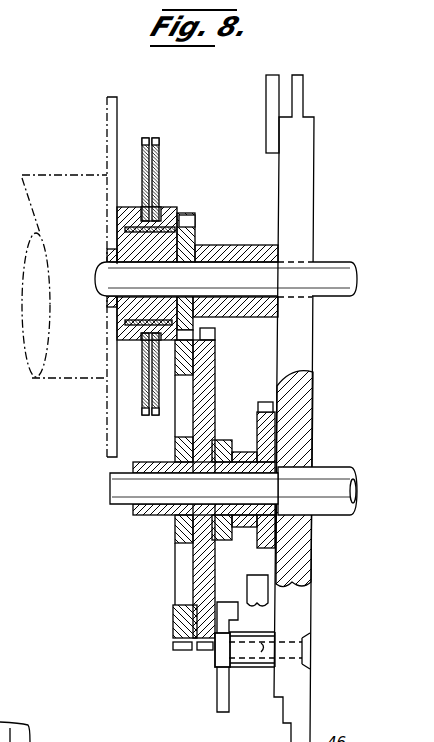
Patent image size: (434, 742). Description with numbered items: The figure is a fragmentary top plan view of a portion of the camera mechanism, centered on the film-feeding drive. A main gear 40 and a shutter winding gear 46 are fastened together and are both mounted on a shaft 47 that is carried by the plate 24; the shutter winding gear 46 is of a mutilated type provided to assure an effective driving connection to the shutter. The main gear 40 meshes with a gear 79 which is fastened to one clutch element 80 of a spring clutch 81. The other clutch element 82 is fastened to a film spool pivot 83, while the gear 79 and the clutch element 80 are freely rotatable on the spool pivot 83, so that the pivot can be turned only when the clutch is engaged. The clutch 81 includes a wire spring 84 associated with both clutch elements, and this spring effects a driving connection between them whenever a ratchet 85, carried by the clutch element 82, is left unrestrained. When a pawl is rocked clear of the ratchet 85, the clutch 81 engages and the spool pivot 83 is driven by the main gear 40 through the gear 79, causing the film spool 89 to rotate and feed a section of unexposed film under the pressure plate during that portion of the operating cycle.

The plate 24 is at (312, 420).
The main gear 40 is at (180, 652).
The shutter winding gear 46 is at (205, 652).
The shaft 47 is at (118, 506).
The gear 79 is at (196, 221).
The clutch element 80 is at (170, 212).
The spring clutch 81 is at (193, 154).
The clutch element 82 is at (130, 207).
The film spool pivot 83 is at (105, 298).
The wire spring 84 is at (125, 230).
The ratchet 85 is at (140, 394).
The film spool 89 is at (62, 175).